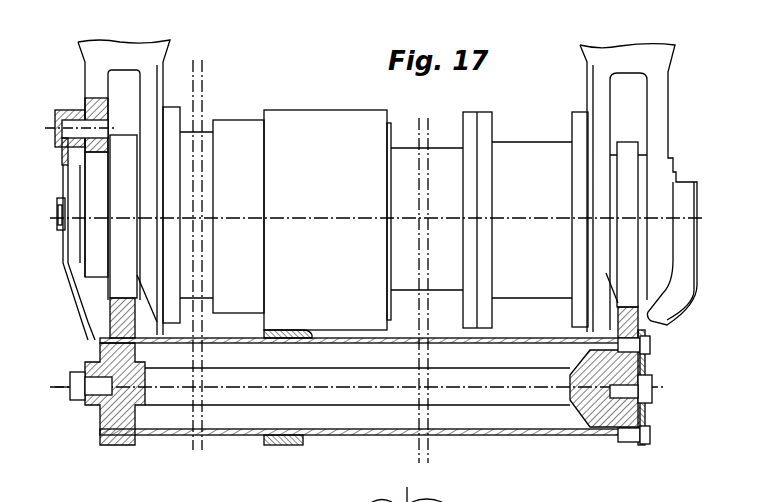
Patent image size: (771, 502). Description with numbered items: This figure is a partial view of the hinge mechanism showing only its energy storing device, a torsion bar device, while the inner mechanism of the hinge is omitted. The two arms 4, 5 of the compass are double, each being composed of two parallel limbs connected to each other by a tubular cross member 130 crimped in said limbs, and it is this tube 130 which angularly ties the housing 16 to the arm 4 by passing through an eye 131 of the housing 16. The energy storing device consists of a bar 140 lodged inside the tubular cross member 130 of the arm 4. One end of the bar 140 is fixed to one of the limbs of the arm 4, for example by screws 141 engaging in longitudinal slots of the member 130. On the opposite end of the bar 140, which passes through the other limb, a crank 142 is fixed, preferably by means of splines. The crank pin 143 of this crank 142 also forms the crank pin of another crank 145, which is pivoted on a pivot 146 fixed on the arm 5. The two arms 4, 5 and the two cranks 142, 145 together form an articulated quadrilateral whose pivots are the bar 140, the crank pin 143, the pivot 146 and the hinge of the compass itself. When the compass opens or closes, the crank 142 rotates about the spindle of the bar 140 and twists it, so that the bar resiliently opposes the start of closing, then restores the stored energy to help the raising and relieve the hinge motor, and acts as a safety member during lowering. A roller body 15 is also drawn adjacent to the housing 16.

The arm 4 is at (120, 318).
The arm 5 is at (168, 52).
The roller body 15 is at (236, 130).
The housing 16 is at (326, 126).
The tubular cross member 130 is at (498, 438).
The eye 131 is at (288, 442).
The bar 140 is at (229, 395).
The screws 141 is at (640, 420).
The crank 142 is at (84, 322).
The crank pin 143 is at (64, 228).
The crank 145 is at (66, 160).
The pivot 146 is at (77, 124).